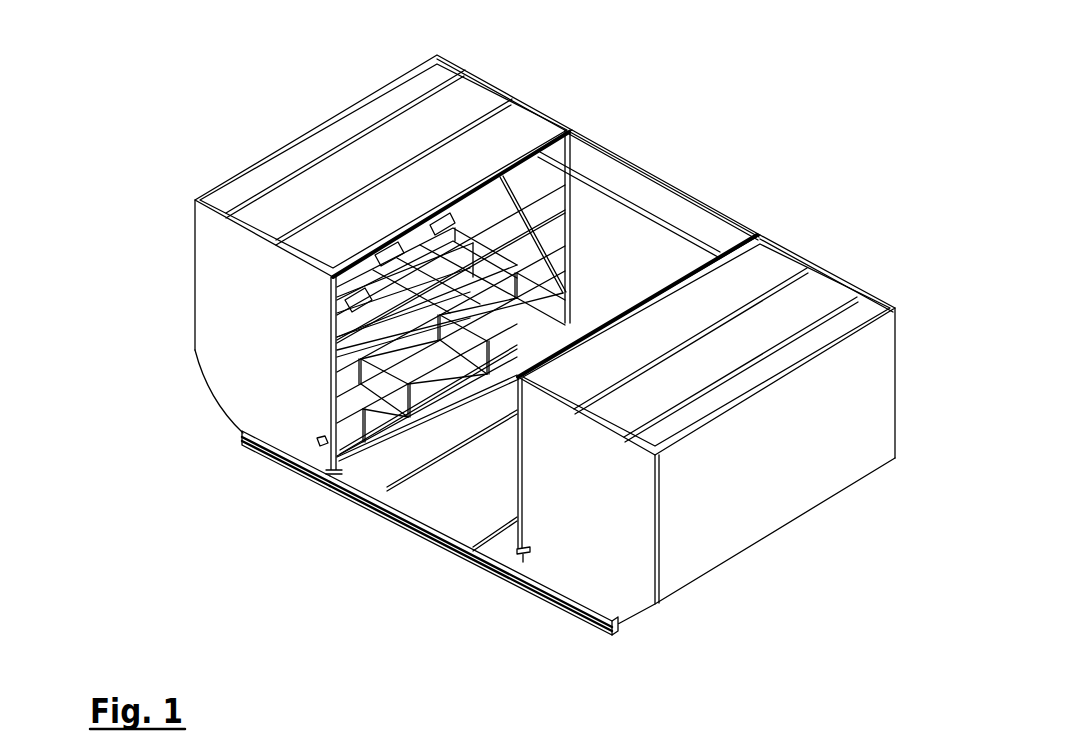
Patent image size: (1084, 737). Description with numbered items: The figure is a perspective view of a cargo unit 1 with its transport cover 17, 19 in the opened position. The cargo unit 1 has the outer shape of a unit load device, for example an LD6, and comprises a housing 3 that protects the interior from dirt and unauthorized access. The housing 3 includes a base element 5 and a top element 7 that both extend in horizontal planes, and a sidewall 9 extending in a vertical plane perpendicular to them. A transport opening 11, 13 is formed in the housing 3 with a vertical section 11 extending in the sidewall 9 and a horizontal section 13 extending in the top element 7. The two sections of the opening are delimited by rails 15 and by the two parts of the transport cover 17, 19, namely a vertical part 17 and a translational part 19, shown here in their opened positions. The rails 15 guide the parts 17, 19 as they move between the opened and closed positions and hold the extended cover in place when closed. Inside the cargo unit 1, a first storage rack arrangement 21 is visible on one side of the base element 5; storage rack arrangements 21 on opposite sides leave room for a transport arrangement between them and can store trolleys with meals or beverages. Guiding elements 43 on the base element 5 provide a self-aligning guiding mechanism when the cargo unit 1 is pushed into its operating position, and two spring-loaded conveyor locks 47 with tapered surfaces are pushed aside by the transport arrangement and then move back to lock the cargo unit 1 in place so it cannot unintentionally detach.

The cargo unit 1 is at (249, 113).
The housing 3 is at (760, 232).
The base element 5 is at (495, 493).
The top element 7 is at (512, 137).
The sidewall 9 is at (249, 368).
The vertical section of the transport opening 11 is at (377, 463).
The horizontal section of the transport opening 13 is at (575, 205).
The rails 15 is at (462, 198).
The vertical part of the transport cover 17 is at (490, 570).
The translational part of the transport cover 19 is at (660, 217).
The storage rack arrangement 21 is at (327, 440).
The guiding elements 43 is at (413, 483).
The spring-loaded conveyor locks 47 is at (320, 440).